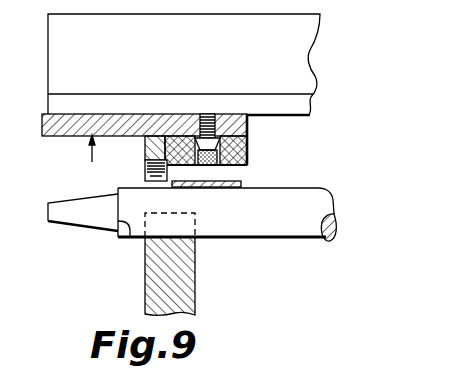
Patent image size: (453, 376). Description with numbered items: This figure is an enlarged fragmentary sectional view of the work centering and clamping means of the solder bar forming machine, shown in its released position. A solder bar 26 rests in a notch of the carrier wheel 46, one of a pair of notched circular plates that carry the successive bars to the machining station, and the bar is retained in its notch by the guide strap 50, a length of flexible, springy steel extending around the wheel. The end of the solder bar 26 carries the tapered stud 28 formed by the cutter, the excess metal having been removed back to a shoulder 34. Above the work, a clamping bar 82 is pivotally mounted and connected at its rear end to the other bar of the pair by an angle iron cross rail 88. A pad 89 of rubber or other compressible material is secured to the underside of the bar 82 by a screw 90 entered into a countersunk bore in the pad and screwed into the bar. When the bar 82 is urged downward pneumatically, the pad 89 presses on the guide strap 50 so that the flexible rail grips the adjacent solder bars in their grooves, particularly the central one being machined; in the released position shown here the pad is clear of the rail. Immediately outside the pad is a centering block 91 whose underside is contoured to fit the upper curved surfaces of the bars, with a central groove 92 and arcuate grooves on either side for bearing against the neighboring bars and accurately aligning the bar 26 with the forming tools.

The solder bar 26 is at (292, 188).
The stud 28 is at (80, 230).
The shoulder 34 is at (126, 237).
The carrier wheel 46 is at (196, 281).
The guide strap 50 is at (240, 183).
The bar 82 is at (56, 124).
The angle iron cross rail 88 is at (300, 67).
The pad 89 is at (248, 150).
The screw 90 is at (212, 115).
The centering block 91 is at (150, 146).
The central groove 92 is at (147, 170).